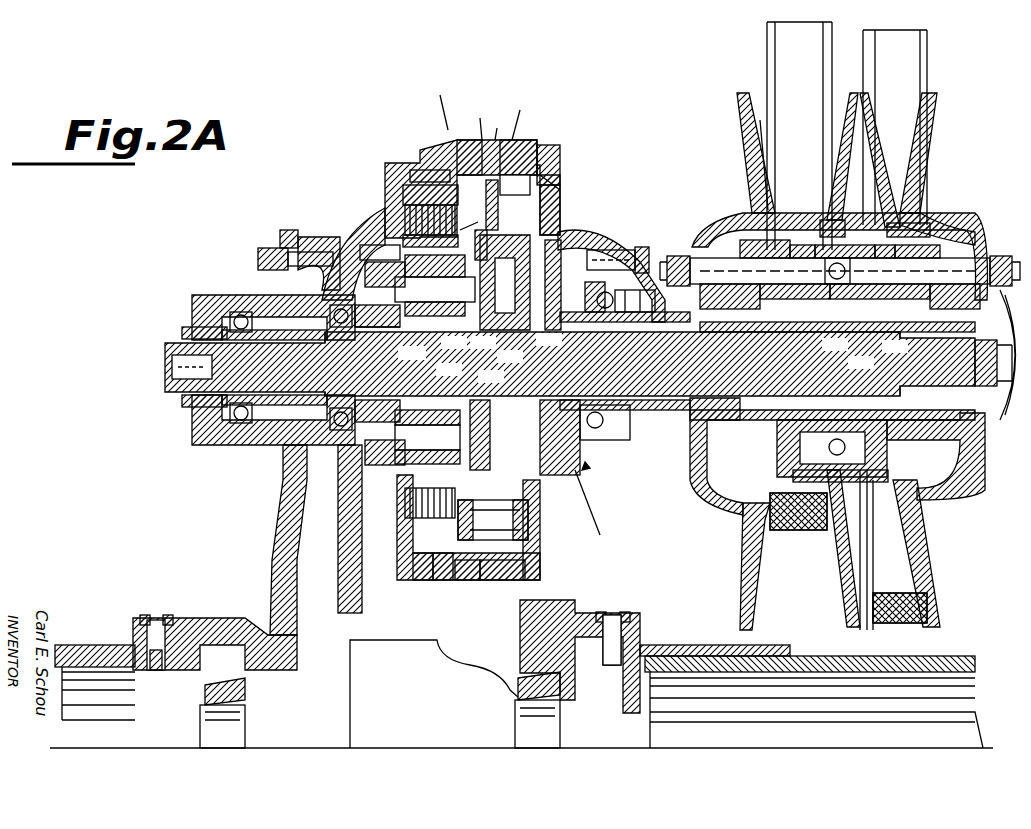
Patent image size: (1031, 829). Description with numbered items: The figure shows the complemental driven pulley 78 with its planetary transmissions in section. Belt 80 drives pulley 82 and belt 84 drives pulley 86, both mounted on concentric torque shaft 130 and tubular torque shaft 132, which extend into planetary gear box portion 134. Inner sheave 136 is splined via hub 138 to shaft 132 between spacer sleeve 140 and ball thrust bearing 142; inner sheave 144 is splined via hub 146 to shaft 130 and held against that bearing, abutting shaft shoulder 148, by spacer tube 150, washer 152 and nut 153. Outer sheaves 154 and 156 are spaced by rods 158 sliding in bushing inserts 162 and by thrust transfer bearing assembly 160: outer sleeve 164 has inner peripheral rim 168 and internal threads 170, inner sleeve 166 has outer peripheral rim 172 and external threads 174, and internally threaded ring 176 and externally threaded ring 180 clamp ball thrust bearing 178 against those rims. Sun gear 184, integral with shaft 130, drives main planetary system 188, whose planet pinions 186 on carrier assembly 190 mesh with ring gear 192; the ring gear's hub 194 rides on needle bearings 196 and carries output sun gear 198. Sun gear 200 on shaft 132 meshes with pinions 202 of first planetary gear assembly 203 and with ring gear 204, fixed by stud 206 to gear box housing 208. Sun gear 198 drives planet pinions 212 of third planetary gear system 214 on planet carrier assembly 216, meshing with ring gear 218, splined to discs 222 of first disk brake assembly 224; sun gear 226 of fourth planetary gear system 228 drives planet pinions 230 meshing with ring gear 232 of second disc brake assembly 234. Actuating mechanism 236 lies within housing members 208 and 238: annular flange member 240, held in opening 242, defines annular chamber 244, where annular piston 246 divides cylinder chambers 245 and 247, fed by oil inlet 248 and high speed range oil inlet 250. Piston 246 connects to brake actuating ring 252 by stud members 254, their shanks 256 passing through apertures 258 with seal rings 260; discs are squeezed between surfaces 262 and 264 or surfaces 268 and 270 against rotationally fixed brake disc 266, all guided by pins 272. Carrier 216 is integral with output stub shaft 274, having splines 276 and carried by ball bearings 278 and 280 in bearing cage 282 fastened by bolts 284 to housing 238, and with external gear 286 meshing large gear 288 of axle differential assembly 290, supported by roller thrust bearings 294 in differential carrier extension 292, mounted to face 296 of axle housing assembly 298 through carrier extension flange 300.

The variable speed pulley assembly 78 is at (973, 118).
The drive belt 80 is at (800, 40).
The fixed sheave half 82 is at (745, 72).
The second belt 84 is at (935, 43).
The movable sheave half 86 is at (864, 66).
The main shaft 130 is at (676, 360).
The bearing sleeve 132 is at (625, 346).
The clutch assembly 134 is at (440, 105).
The lower sheave flange 136 is at (848, 610).
The hub bearing 138 is at (757, 420).
The hub housing 140 is at (685, 410).
The sleeve 142 is at (861, 362).
The belt section 144 is at (870, 630).
The pulley hub 146 is at (936, 453).
The spacer 148 is at (835, 344).
The shaft end 150 is at (870, 354).
The retaining ring 152 is at (1003, 320).
The end nut 153 is at (1005, 395).
The lower sheave half 154 is at (740, 560).
The outer sheave flange 156 is at (935, 560).
The hub shell 158 is at (730, 222).
The bearing 160 is at (848, 234).
The bolt 162 is at (948, 228).
The sheave hub 164 is at (850, 484).
The inner sleeve 166 is at (837, 316).
The bearing race 168 is at (805, 245).
The spacer 170 is at (878, 242).
The sleeve 172 is at (880, 292).
The collar 174 is at (795, 296).
The bearing cap 176 is at (765, 243).
The pulley shaft 178 is at (840, 271).
The washer 180 is at (913, 244).
The shaft portion 184 is at (549, 339).
The shaft shoulder 186 is at (510, 356).
The bearing housing wall 188 is at (550, 240).
The gear 190 is at (610, 488).
The cover opening 192 is at (515, 185).
The shaft splines 194 is at (454, 342).
The shaft portion 196 is at (491, 376).
The shaft portion 198 is at (449, 369).
The bearing support 200 is at (535, 310).
The bearing 202 is at (560, 400).
The arrow 203 is at (590, 470).
The retainer 204 is at (590, 503).
The housing cover 206 is at (585, 232).
The cover bolt 208 is at (612, 250).
The hub 212 is at (435, 297).
The piston 214 is at (496, 236).
The hub flange 216 is at (396, 361).
The gear hub 218 is at (442, 435).
The lower housing 222 is at (393, 512).
The spring 224 is at (442, 580).
The shaft section 226 is at (412, 353).
The clutch drum 228 is at (380, 358).
The clutch hub 230 is at (435, 278).
The gear 232 is at (427, 430).
The retainer 234 is at (418, 580).
The housing wall 236 is at (542, 540).
The clutch housing 238 is at (388, 163).
The housing top 240 is at (462, 150).
The fitting 242 is at (468, 122).
The cover plate 244 is at (518, 147).
The passage 245 is at (492, 126).
The cover block 246 is at (545, 145).
The wall 247 is at (542, 170).
The fitting 248 is at (515, 118).
The passage 250 is at (543, 188).
The clutch plates 252 is at (400, 530).
The retainer plate 254 is at (500, 580).
The seal 256 is at (475, 580).
The support bracket 258 is at (516, 608).
The bearing 260 is at (528, 515).
The piston rod 262 is at (500, 205).
The pressure plate 264 is at (474, 221).
The clutch discs 266 is at (432, 204).
The clutch plates 268 is at (420, 220).
The housing flange 270 is at (380, 245).
The cover 272 is at (420, 170).
The keyway 274 is at (200, 356).
The end cap 276 is at (178, 330).
The bearing housing 278 is at (250, 295).
The bearing 280 is at (330, 418).
The bearing 282 is at (226, 283).
The bolt 284 is at (270, 248).
The support leg 286 is at (293, 490).
The support leg 288 is at (340, 510).
The belt guard 290 is at (325, 660).
The mounting plate 292 is at (245, 618).
The mounting pad 294 is at (235, 685).
The bolt 296 is at (170, 620).
The frame member 298 is at (125, 645).
The nut 300 is at (145, 615).